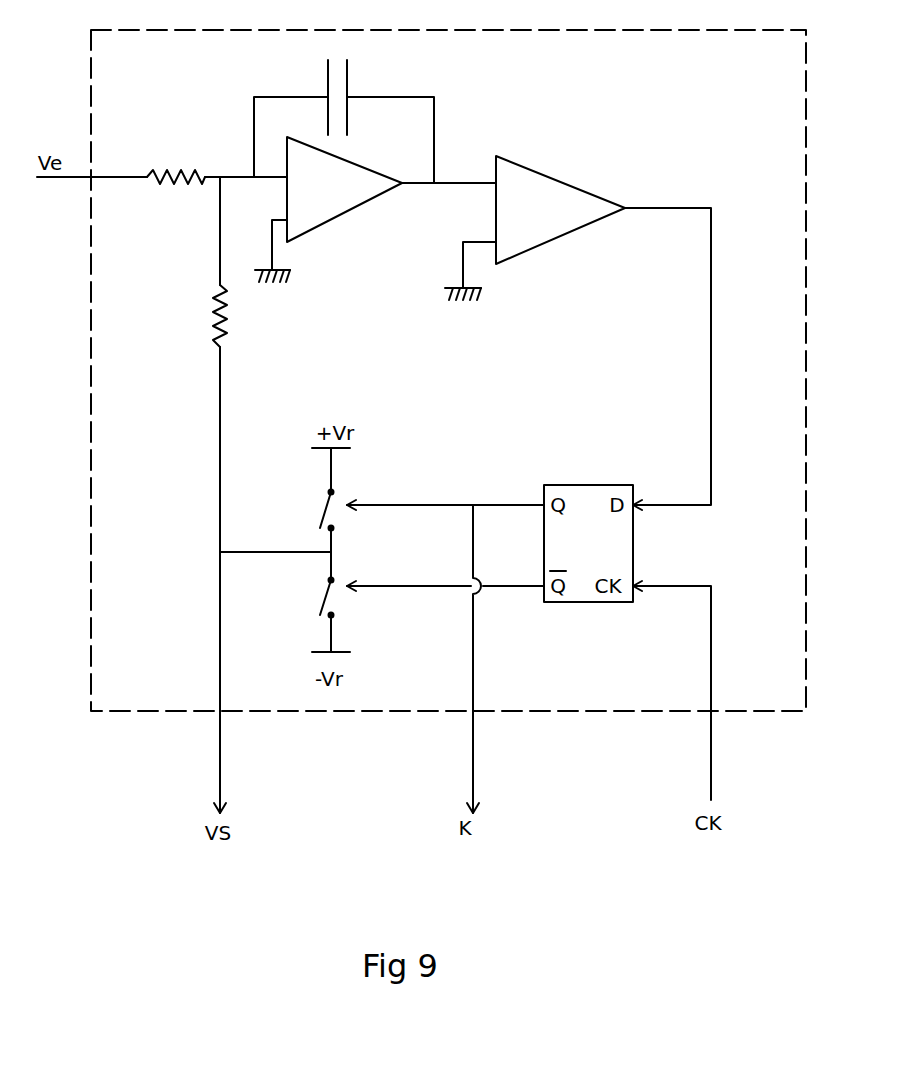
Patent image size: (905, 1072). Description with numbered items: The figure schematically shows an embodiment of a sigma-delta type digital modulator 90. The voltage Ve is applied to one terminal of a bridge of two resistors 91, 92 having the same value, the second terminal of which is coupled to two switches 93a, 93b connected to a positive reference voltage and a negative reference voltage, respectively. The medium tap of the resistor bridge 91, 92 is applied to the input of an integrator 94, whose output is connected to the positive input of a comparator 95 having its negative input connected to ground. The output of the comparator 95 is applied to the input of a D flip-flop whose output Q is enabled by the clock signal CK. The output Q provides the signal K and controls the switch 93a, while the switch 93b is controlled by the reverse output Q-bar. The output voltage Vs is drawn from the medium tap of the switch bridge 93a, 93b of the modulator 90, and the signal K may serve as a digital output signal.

The sigma-delta type digital modulator 90 is at (806, 250).
The resistor 91 is at (183, 170).
The resistor 92 is at (215, 303).
The switch 93a is at (305, 518).
The switch 93b is at (300, 602).
The integrator 94 is at (347, 228).
The comparator 95 is at (578, 243).